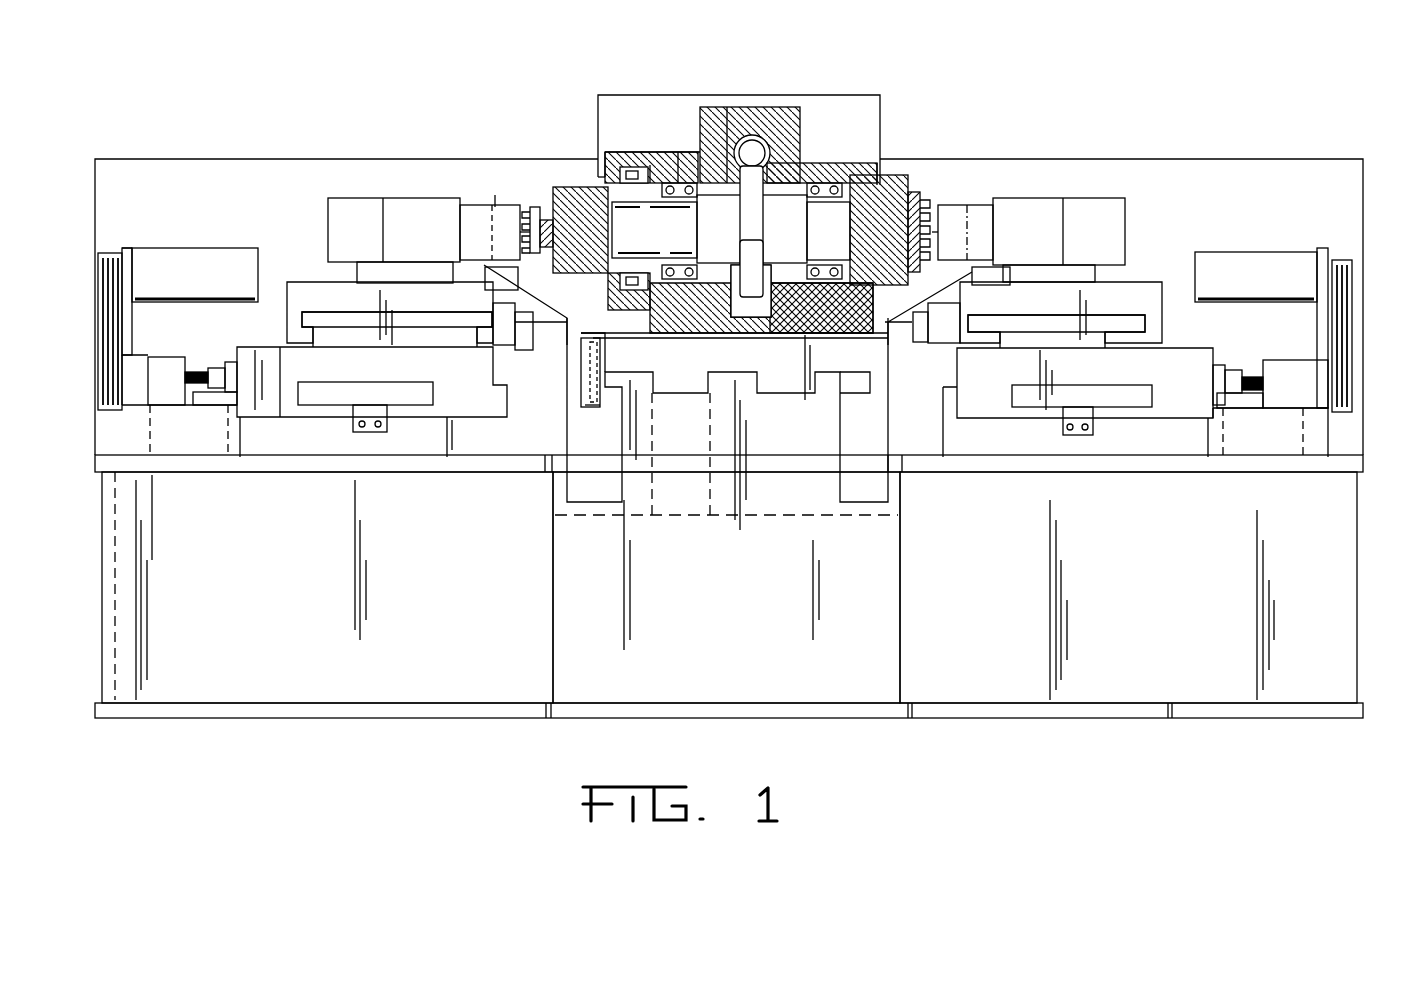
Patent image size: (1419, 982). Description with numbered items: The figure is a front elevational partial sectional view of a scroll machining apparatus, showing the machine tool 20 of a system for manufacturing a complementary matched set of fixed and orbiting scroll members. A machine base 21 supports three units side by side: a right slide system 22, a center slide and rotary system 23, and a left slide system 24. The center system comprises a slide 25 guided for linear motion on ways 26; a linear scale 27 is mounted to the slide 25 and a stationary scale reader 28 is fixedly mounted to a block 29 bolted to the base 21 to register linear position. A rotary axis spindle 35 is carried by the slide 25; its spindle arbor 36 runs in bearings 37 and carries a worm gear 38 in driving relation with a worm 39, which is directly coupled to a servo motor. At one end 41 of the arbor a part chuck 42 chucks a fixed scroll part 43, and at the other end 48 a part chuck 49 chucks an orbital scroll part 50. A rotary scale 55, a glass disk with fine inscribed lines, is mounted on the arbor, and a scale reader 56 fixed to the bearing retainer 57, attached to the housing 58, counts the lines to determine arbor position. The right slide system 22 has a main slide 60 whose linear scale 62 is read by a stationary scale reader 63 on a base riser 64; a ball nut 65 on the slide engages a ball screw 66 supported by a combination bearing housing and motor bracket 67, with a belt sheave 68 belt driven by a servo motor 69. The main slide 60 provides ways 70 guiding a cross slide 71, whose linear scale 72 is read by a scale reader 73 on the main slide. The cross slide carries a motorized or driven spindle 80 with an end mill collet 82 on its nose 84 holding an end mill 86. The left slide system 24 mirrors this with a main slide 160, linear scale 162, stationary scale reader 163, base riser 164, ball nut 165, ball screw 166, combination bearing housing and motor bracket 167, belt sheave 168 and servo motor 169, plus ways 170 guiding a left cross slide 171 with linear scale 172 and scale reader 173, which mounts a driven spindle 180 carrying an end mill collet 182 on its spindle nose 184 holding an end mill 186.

The machine tool 20 is at (1200, 112).
The machine base 21 is at (1340, 668).
The right slide system 22 is at (1237, 230).
The center slide and rotary system 23 is at (738, 120).
The left slide system 24 is at (275, 250).
The slide 25 is at (788, 393).
The ways 26 is at (640, 380).
The linear scale 27 is at (600, 347).
The stationary scale reader 28 is at (589, 375).
The block 29 is at (590, 405).
The rotary axis spindle 35 is at (762, 115).
The spindle arbor 36 is at (717, 190).
The bearings 37 is at (637, 157).
The worm gear 38 is at (755, 215).
The worm 39 is at (775, 145).
The end of spindle arbor 41 is at (832, 225).
The part chuck 42 is at (883, 215).
The fixed scroll part 43 is at (922, 223).
The end of spindle arbor 48 is at (620, 232).
The part chuck 49 is at (577, 197).
The orbital scroll part 50 is at (545, 215).
The rotary scale 55 is at (660, 298).
The scale reader 56 is at (600, 173).
The bearing retainer 57 is at (630, 170).
The housing 58 is at (677, 163).
The main slide 60 is at (1180, 365).
The linear scale 62 is at (1130, 400).
The stationary scale reader 63 is at (1068, 425).
The base riser 64 is at (1000, 440).
The ball nut 65 is at (1220, 378).
The ball screw 66 is at (1258, 405).
The combination bearing housing and motor bracket 67 is at (1303, 390).
The belt sheave 68 is at (1350, 385).
The servo motor 69 is at (1290, 262).
The ways 70 is at (985, 325).
The cross slide 71 is at (1140, 292).
The linear scale 72 is at (915, 325).
The scale reader 73 is at (921, 355).
The motorized or driven spindle 80 is at (1083, 215).
The end mill collet 82 is at (960, 237).
The nose 84 is at (992, 243).
The end mill 86 is at (937, 200).
The main slide 160 is at (262, 362).
The linear scale 162 is at (312, 400).
The stationary scale reader 163 is at (347, 425).
The base riser 164 is at (425, 440).
The ball nut 165 is at (237, 380).
The ball screw 166 is at (188, 406).
The combination bearing housing and motor bracket 167 is at (152, 388).
The belt sheave 168 is at (100, 373).
The servo motor 169 is at (190, 262).
The ways 170 is at (332, 322).
The left cross slide 171 is at (318, 300).
The linear scale 172 is at (535, 313).
The scale reader 173 is at (497, 352).
The motorized or driven spindle 180 is at (372, 215).
The end mill collet 182 is at (503, 215).
The spindle nose 184 is at (472, 207).
The end mill 186 is at (522, 207).